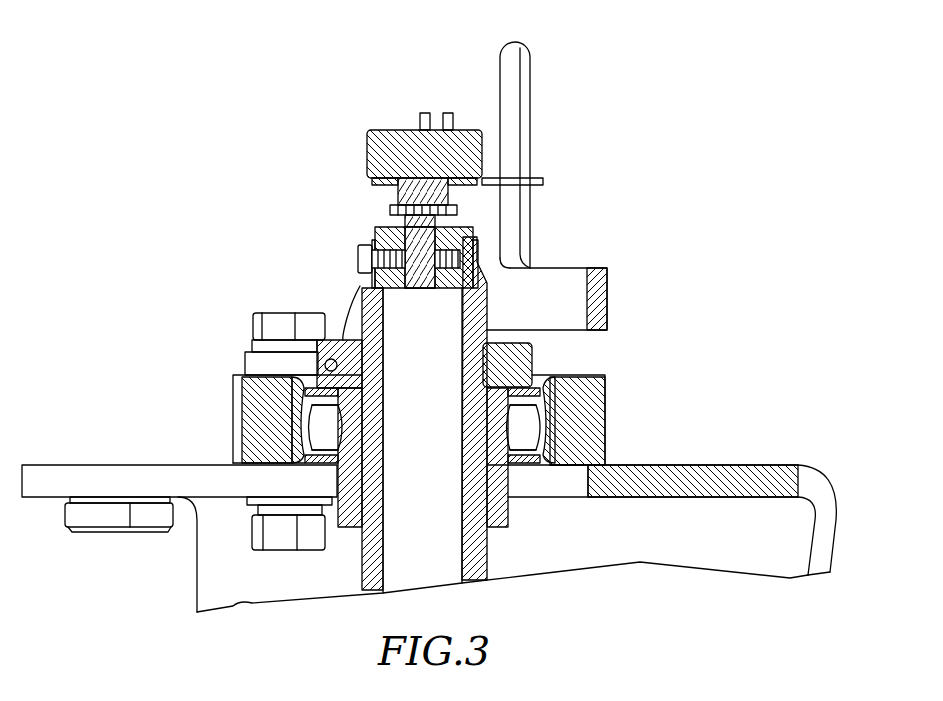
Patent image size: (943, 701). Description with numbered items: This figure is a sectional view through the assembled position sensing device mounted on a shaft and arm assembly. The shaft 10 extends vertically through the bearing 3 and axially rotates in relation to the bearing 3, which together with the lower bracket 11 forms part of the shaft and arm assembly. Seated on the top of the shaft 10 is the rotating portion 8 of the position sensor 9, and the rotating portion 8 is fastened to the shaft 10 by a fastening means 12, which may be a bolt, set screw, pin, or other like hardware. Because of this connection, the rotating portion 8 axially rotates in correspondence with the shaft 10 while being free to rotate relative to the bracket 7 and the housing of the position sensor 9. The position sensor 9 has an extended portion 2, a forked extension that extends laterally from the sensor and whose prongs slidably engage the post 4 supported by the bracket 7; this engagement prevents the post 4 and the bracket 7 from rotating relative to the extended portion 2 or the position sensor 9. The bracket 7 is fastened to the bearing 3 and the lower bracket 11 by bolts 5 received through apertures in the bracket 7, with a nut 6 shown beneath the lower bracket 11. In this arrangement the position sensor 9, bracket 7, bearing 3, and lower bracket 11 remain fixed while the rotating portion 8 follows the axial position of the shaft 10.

The extended portion 2 is at (543, 181).
The bearing 3 is at (233, 395).
The post 4 is at (531, 75).
The bolts 5 is at (280, 315).
The nut 6 is at (253, 533).
The bracket 7 is at (556, 268).
The rotating portion 8 is at (386, 229).
The position sensor 9 is at (368, 136).
The shaft 10 is at (489, 558).
The lower bracket 11 is at (133, 465).
The fastening means 12 is at (358, 254).